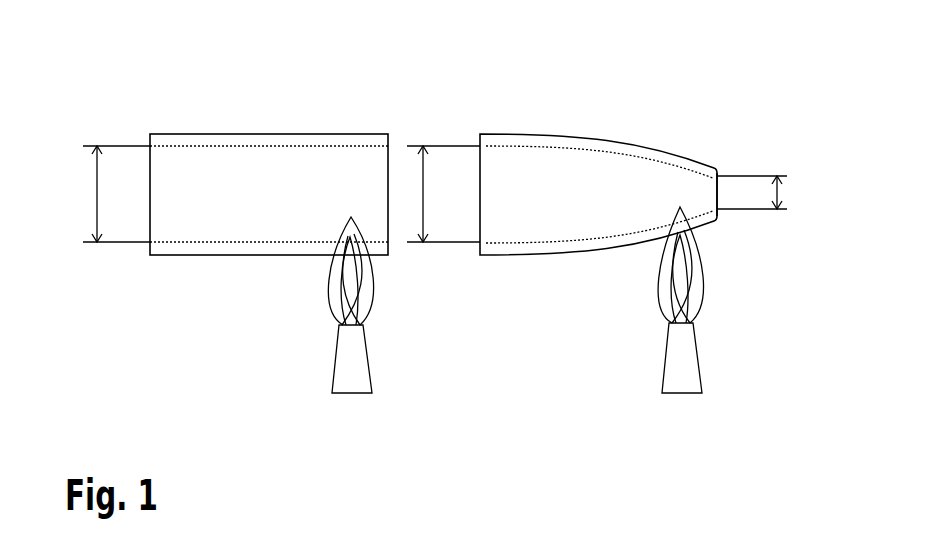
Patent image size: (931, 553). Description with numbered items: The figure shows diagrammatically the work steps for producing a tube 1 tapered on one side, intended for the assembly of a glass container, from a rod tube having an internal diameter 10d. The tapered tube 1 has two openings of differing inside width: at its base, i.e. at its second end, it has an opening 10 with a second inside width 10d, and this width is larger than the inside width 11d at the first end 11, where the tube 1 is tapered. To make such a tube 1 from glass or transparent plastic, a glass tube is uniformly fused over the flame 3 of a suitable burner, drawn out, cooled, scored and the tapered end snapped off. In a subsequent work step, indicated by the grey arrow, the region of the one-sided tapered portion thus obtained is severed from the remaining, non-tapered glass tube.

The tube tapered on one side 1 is at (552, 133).
The opening 10 is at (466, 163).
The first end 11 is at (734, 198).
The flame 3 is at (644, 310).
The inside width at the base 10d is at (97, 195).
The inside width at the first end 11d is at (783, 192).